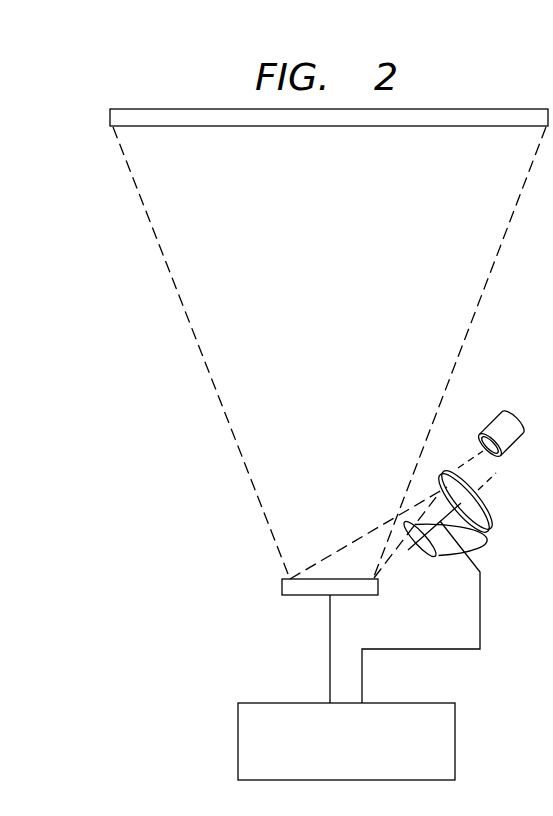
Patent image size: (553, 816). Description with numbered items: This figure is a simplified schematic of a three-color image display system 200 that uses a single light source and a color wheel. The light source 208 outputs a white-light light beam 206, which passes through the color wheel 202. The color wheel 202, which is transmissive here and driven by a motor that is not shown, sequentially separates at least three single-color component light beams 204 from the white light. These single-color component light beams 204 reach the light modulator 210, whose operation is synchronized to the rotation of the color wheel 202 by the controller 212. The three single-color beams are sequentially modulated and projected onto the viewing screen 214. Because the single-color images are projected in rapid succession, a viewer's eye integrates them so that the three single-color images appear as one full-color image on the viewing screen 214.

The three-color image display system 200 is at (93, 264).
The color wheel 202 is at (490, 536).
The single-color component light beams 204 is at (388, 556).
The white-light light beam 206 is at (470, 456).
The light source 208 is at (509, 426).
The light modulator 210 is at (281, 584).
The controller 212 is at (238, 743).
The viewing screen 214 is at (109, 118).